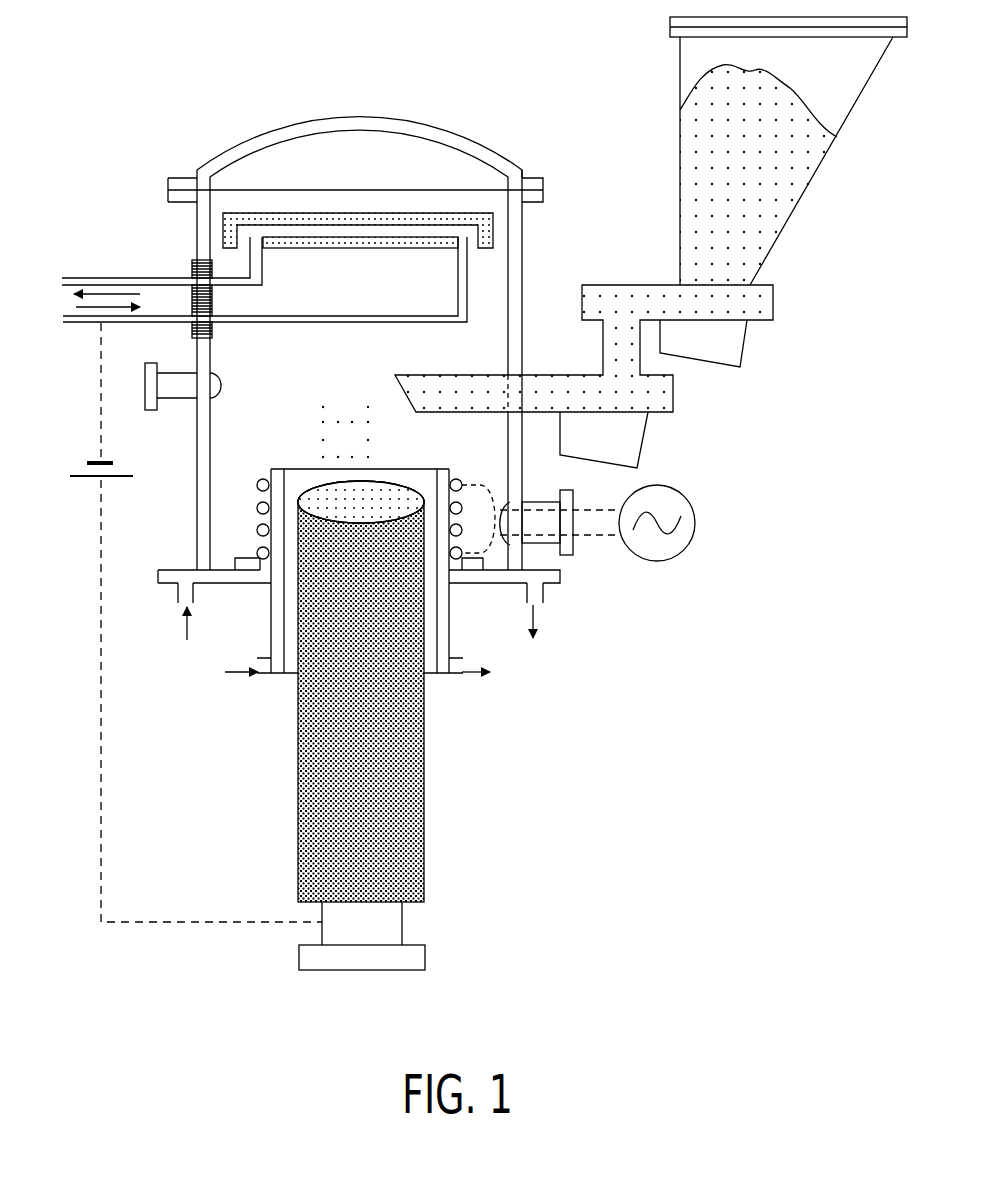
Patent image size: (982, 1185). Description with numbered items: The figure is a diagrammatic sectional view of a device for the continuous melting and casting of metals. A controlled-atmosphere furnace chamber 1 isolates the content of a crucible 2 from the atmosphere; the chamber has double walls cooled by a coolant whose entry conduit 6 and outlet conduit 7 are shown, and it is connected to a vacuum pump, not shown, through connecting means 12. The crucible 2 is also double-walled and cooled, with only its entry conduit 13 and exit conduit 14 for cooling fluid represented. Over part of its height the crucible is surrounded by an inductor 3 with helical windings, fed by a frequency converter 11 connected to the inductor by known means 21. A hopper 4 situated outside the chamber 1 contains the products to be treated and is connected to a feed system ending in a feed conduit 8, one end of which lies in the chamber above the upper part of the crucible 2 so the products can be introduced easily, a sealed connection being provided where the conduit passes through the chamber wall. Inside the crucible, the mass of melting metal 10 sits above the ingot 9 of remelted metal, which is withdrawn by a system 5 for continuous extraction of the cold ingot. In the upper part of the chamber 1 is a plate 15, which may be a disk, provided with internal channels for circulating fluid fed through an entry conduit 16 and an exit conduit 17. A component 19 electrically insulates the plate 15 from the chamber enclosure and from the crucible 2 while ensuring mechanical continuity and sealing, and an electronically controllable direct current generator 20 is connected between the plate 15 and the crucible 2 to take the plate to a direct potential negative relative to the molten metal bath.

The chamber 1 is at (496, 283).
The crucible 2 is at (284, 520).
The inductor 3 is at (463, 540).
The hopper 4 is at (714, 138).
The extraction system 5 is at (388, 923).
The entry conduit 6 is at (175, 630).
The outlet conduit 7 is at (549, 629).
The feed conduit 8 is at (423, 387).
The ingot 9 is at (408, 783).
The mass of melting metal 10 is at (363, 492).
The frequency converter 11 is at (693, 532).
The connecting means 12 is at (145, 385).
The entry conduit 13 is at (235, 691).
The exit conduit 14 is at (489, 691).
The plate 15 is at (408, 215).
The entry conduit 16 is at (80, 325).
The exit conduit 17 is at (86, 278).
The component 19 is at (190, 270).
The direct current generator 20 is at (82, 478).
The known means 21 is at (540, 545).